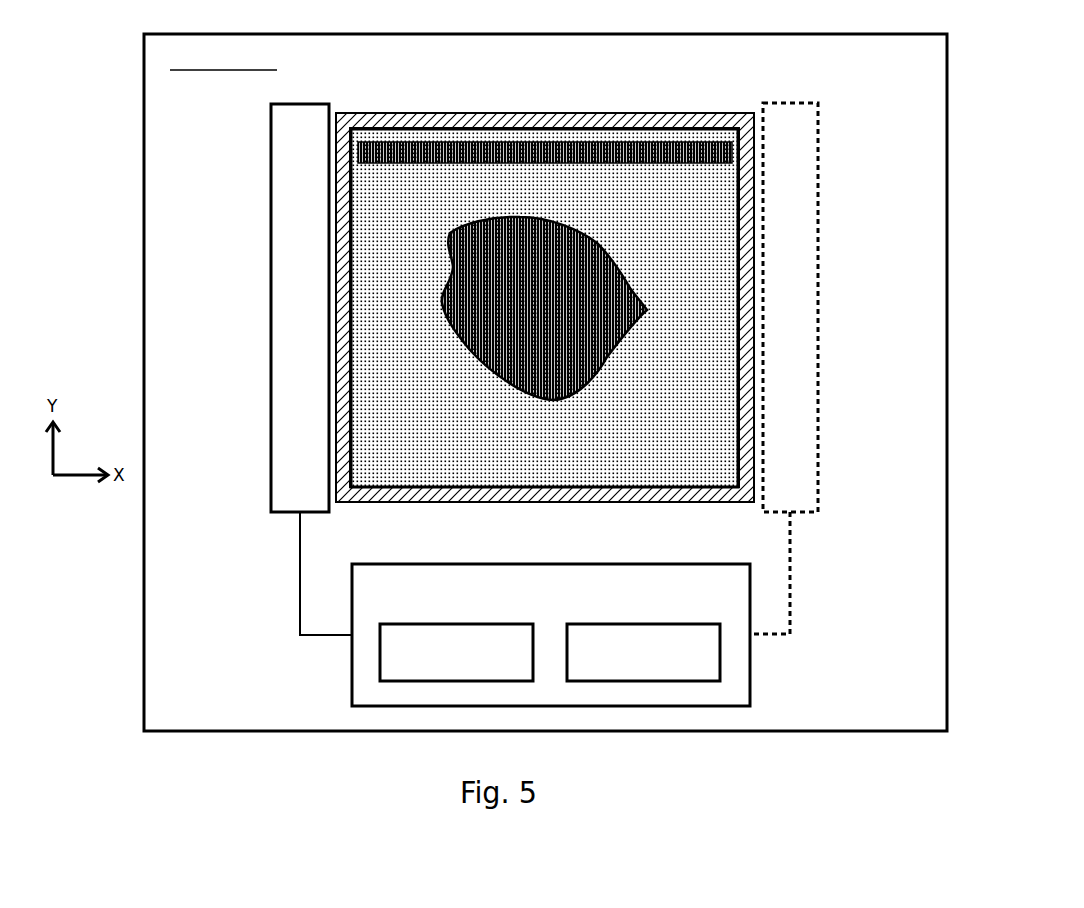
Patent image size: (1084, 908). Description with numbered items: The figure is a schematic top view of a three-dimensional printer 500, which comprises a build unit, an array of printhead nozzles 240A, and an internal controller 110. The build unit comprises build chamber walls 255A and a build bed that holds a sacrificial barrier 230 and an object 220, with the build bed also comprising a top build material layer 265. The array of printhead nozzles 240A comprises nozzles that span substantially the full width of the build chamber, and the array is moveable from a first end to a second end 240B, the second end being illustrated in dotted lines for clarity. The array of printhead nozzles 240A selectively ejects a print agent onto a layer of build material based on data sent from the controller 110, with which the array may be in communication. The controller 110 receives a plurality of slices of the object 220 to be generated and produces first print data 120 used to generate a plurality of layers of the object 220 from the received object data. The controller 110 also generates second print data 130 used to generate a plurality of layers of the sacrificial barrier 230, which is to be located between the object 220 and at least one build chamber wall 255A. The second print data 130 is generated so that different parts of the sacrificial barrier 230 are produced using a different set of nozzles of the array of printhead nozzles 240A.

The three-dimensional printer 500 is at (144, 118).
The array of printhead nozzles 240A is at (271, 167).
The second end 240B is at (818, 162).
The build chamber walls 255A is at (382, 113).
The sacrificial barrier 230 is at (668, 142).
The object 220 is at (607, 253).
The top build material layer 265 is at (692, 421).
The internal controller 110 is at (752, 682).
The first print data 120 is at (456, 652).
The second print data 130 is at (643, 652).